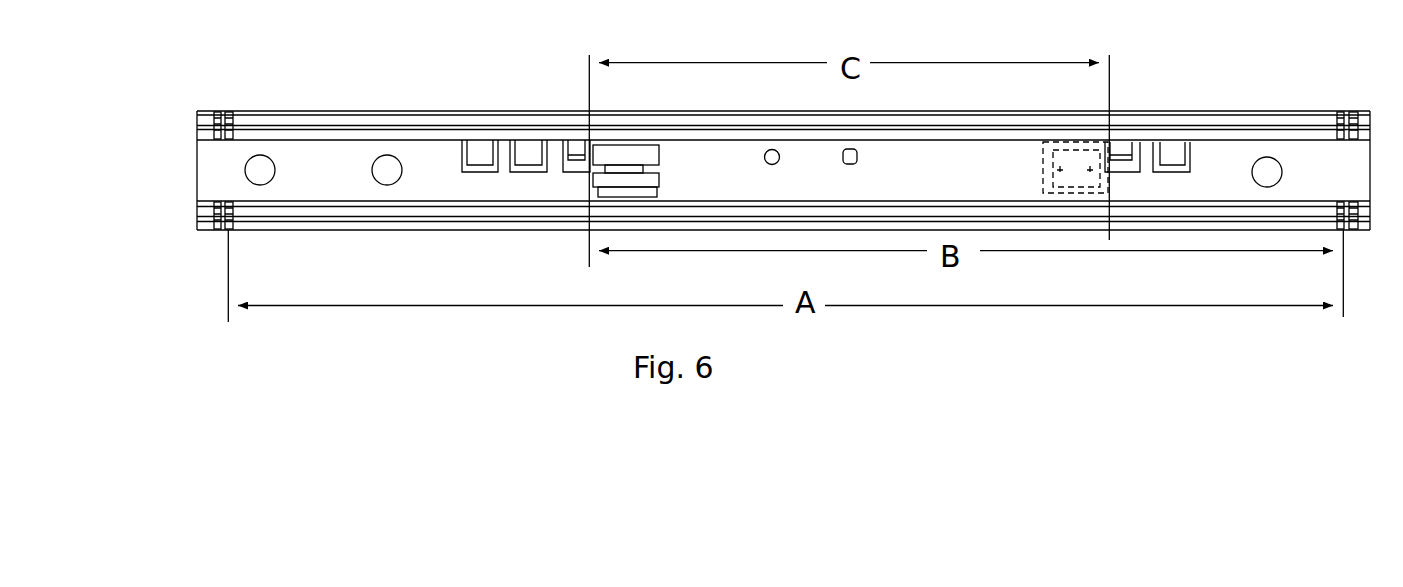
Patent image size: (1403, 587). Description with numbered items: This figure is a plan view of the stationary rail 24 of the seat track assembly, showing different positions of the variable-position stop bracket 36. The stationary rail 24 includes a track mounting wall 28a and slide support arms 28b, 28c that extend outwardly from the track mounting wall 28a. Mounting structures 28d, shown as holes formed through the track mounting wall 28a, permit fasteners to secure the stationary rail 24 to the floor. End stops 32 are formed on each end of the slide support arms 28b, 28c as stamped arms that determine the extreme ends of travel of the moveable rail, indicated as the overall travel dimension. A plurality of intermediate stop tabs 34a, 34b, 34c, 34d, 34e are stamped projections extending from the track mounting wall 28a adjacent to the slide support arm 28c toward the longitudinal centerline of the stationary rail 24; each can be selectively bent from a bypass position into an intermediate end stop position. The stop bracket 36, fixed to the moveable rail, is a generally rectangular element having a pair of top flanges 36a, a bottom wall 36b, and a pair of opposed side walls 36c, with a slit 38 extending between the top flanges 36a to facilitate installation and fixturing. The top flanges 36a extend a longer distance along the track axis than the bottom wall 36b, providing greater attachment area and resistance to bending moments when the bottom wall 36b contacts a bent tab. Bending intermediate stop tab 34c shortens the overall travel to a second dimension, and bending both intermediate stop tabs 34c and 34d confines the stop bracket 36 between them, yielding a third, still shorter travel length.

The stationary rail 24 is at (351, 62).
The track mounting wall 28a is at (1232, 183).
The slide support arm 28b is at (345, 225).
The slide support arm 28c is at (970, 207).
The mounting structures 28d is at (1310, 172).
The end stops 32 is at (216, 196).
The intermediate stop tab 34a is at (483, 153).
The intermediate stop tab 34b is at (530, 153).
The intermediate stop tab 34c is at (575, 152).
The intermediate stop tab 34d is at (1127, 153).
The intermediate stop tab 34e is at (1170, 152).
The variable-position stop bracket 36 is at (625, 180).
The top flanges 36a is at (660, 150).
The bottom wall 36b is at (628, 167).
The side walls 36c is at (636, 190).
The slit 38 is at (650, 168).